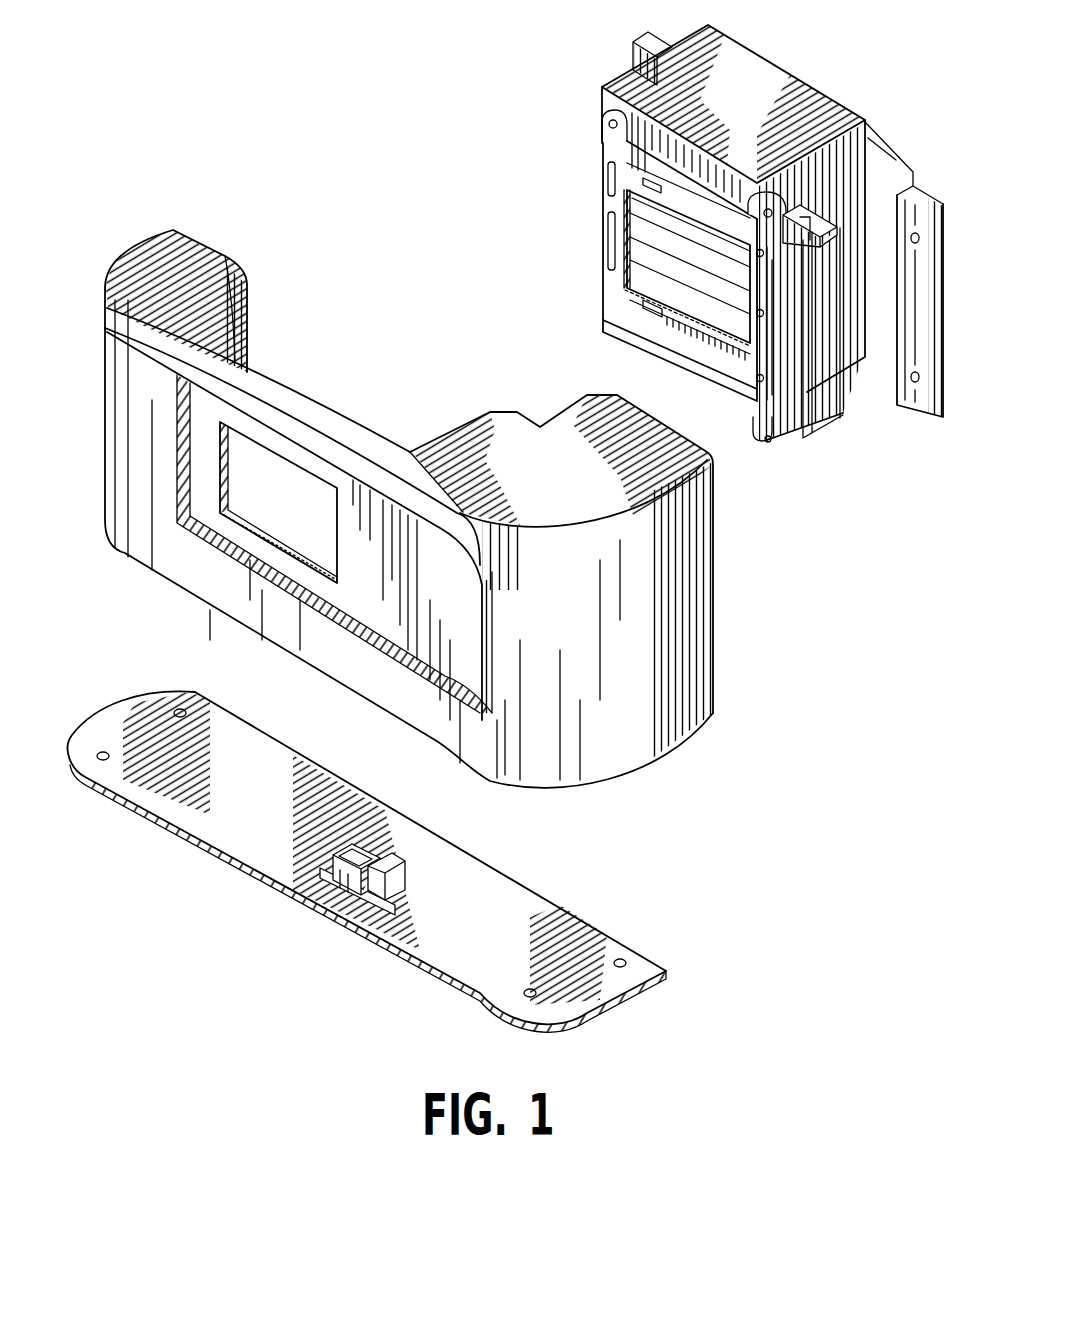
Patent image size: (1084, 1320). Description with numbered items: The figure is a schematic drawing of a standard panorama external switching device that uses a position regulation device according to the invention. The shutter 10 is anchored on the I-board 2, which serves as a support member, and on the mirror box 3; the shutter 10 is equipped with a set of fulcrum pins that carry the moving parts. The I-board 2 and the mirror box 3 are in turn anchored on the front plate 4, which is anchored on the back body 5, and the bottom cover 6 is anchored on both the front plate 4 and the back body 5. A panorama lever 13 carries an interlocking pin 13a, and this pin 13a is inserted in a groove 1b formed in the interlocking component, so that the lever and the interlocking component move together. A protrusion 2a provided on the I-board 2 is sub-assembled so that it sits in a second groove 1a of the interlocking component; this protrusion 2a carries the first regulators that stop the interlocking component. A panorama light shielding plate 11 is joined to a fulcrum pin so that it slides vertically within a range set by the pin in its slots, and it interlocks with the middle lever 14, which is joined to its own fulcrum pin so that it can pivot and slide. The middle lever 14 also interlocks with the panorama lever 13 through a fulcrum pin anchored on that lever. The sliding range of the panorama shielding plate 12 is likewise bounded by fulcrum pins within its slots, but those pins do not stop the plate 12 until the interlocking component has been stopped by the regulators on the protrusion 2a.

The groove 1a is at (360, 848).
The groove 1b is at (380, 860).
The I-board 2 is at (868, 140).
The protrusion 2a is at (758, 438).
The mirror box 3 is at (760, 80).
The front plate 4 is at (897, 407).
The back body 5 is at (226, 278).
The bottom cover 6 is at (612, 947).
The shutter 10 is at (807, 393).
The panorama light shielding plate 11 is at (630, 302).
The panorama shielding plate 12 is at (603, 151).
The panorama lever 13 is at (670, 327).
The interlocking pin 13a is at (771, 440).
The middle lever 14 is at (680, 198).